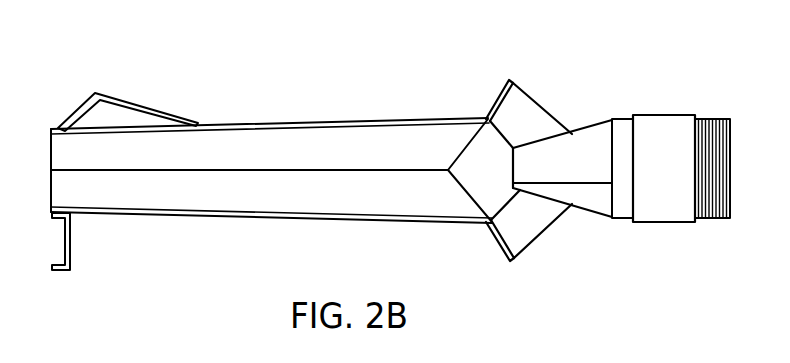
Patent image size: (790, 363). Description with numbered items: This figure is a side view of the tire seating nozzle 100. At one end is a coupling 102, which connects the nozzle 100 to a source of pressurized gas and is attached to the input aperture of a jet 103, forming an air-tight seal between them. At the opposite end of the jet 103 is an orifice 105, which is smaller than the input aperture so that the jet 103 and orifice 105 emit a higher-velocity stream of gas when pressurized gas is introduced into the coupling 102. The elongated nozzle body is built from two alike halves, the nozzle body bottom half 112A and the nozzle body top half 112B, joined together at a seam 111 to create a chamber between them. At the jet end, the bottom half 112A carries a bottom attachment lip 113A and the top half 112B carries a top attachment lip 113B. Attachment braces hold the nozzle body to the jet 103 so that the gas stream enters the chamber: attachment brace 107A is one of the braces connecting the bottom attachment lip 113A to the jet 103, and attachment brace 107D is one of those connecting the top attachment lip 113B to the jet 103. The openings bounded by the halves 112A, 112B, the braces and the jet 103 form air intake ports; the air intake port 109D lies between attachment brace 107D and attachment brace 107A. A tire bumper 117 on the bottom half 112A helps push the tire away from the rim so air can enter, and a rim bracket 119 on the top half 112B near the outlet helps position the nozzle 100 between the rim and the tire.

The nozzle 100 is at (586, 83).
The coupling 102 is at (665, 135).
The jet 103 is at (595, 203).
The orifice 105 is at (500, 160).
The attachment brace 107A is at (535, 135).
The attachment brace 107D is at (525, 232).
The air intake port 109D is at (475, 195).
The seam 111 is at (342, 170).
The nozzle body bottom half 112A is at (270, 160).
The nozzle body top half 112B is at (297, 203).
The bottom attachment lip 113A is at (493, 113).
The top attachment lip 113B is at (497, 258).
The tire bumper 117 is at (135, 105).
The rim bracket 119 is at (72, 268).